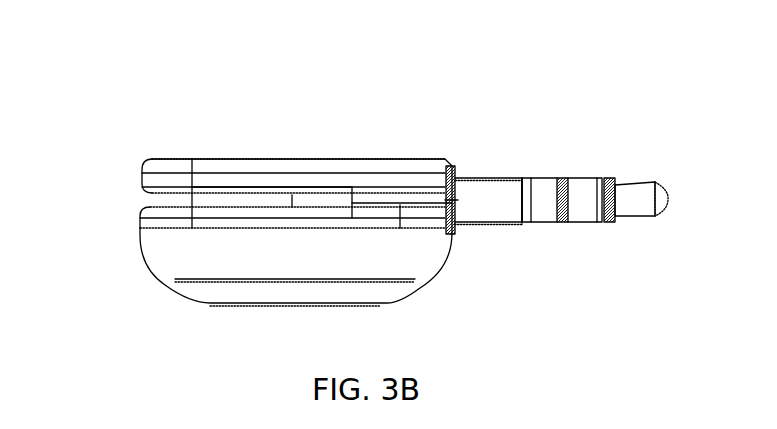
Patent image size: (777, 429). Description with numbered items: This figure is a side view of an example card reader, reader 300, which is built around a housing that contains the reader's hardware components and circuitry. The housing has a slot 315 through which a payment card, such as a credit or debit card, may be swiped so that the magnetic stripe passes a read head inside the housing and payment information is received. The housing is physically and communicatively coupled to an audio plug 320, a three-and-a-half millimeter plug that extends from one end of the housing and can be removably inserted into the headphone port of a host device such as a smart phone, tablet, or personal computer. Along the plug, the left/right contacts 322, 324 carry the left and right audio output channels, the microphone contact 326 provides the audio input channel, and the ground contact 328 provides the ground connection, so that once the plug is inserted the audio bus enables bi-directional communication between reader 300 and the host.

The reader 300 is at (184, 92).
The slot 315 is at (138, 195).
The audio plug 320 is at (677, 118).
The left/right contact 322 is at (643, 203).
The left/right contact 324 is at (578, 193).
The microphone contact 326 is at (487, 208).
The ground contact 328 is at (546, 215).